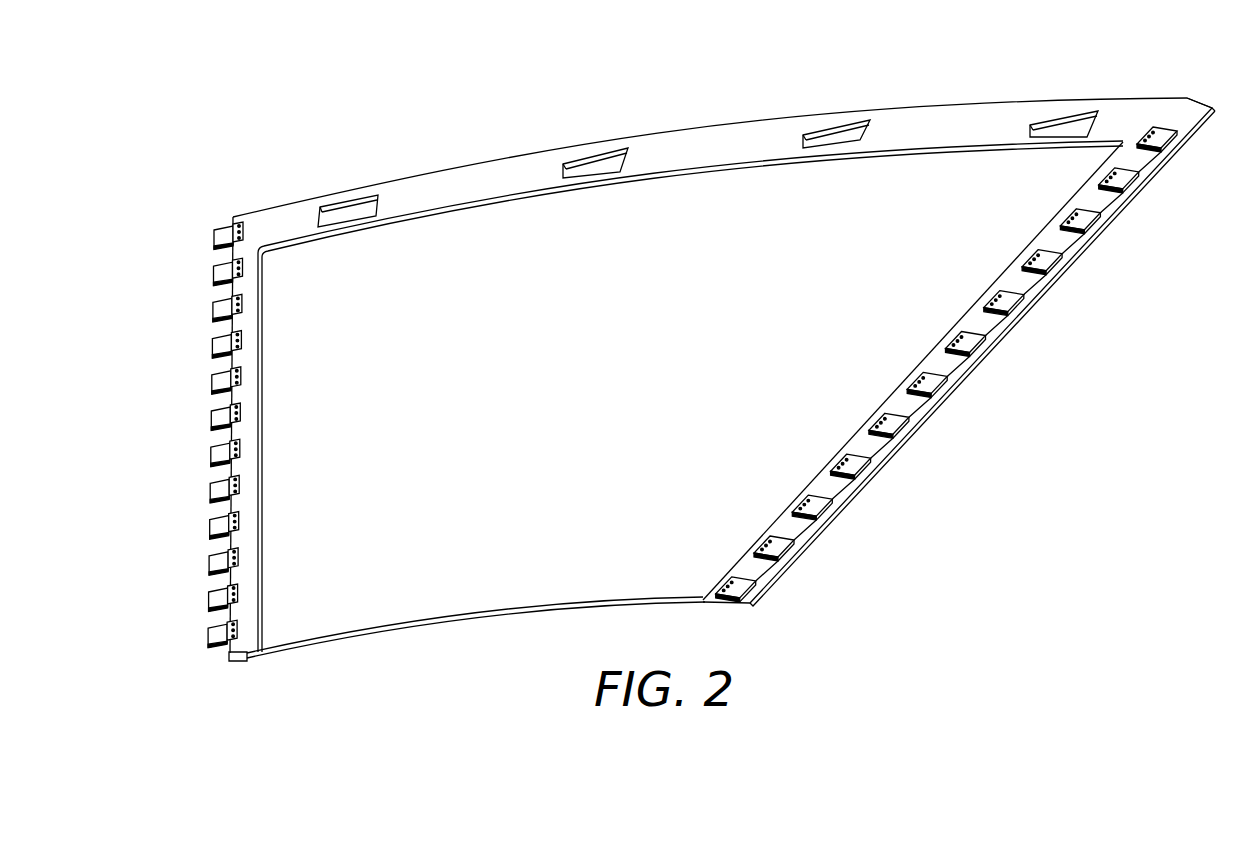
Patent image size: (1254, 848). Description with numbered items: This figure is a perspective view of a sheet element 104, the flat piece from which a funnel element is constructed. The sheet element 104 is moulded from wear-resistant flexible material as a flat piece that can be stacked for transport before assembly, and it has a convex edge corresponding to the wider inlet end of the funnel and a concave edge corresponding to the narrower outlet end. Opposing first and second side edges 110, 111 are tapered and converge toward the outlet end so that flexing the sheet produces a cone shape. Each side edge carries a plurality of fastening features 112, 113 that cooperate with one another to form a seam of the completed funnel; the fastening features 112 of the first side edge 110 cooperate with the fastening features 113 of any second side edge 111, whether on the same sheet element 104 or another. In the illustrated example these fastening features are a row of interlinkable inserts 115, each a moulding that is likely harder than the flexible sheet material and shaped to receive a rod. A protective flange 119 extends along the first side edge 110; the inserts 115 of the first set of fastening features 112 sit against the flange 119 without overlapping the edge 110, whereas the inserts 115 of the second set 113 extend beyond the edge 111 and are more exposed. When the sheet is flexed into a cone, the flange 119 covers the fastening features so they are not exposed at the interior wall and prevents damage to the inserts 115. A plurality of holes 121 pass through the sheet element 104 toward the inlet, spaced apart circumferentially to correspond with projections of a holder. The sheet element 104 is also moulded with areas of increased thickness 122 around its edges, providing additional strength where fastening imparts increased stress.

The sheet element 104 is at (538, 408).
The first side edge 110 is at (949, 395).
The second side edge 111 is at (201, 422).
The fastening features 112 is at (1189, 136).
The fastening features 113 is at (200, 232).
The interlinkable insert 115 is at (1012, 303).
The protective flange 119 is at (767, 570).
The holes 121 is at (350, 212).
The areas of increased thickness 122 is at (1143, 108).